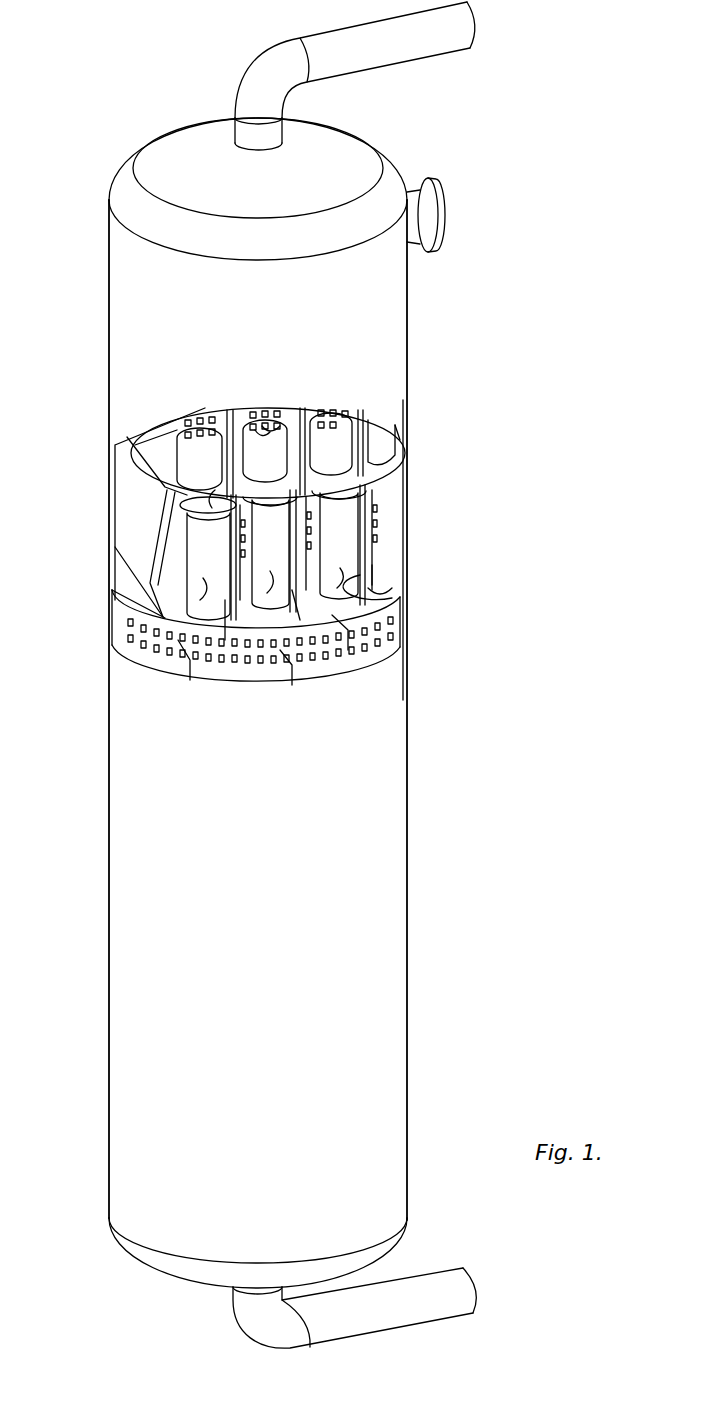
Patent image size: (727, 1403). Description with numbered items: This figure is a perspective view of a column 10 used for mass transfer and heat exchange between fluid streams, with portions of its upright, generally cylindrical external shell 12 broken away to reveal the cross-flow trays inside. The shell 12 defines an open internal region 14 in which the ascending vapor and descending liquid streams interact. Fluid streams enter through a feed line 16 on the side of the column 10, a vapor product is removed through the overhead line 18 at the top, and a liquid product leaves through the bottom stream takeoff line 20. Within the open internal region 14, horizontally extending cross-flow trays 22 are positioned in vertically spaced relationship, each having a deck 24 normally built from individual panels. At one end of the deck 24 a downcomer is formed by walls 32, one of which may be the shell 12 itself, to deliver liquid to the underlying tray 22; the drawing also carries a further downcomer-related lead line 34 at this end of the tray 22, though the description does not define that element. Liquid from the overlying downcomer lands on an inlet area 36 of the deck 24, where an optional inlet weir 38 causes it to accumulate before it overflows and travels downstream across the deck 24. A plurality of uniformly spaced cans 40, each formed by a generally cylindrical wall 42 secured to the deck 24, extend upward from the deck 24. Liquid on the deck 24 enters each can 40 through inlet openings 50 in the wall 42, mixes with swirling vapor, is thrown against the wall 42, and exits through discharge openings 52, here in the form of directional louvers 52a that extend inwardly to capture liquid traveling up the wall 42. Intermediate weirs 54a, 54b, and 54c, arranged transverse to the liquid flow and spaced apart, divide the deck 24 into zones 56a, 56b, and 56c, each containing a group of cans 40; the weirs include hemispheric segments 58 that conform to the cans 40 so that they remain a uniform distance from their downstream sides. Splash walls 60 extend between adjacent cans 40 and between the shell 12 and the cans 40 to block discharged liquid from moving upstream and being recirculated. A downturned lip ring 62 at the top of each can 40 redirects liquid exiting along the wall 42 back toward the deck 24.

The column 10 is at (408, 342).
The external shell 12 is at (408, 517).
The open internal region 14 is at (411, 480).
The feed line 16 is at (430, 217).
The overhead line 18 is at (388, 58).
The bottom stream takeoff line 20 is at (453, 1298).
The cross-flow tray 22 is at (392, 422).
The deck 24 is at (385, 450).
The wall 32 is at (125, 482).
The deflector edge 34 is at (140, 438).
The inlet area 36 is at (133, 592).
The inlet weir 38 is at (125, 563).
The can 40 is at (420, 673).
The wall 42 is at (187, 517).
The inlet opening 50 is at (271, 574).
The discharge opening 52 is at (278, 418).
The directional louver 52a is at (262, 430).
The intermediate weir 54a is at (227, 607).
The intermediate weir 54b is at (293, 592).
The intermediate weir 54c is at (375, 588).
The zone 56a is at (183, 640).
The zone 56b is at (285, 648).
The zone 56c is at (335, 613).
The hemispheric segment 58 is at (380, 573).
The splash wall 60 is at (295, 424).
The downturned lip ring 62 is at (212, 508).